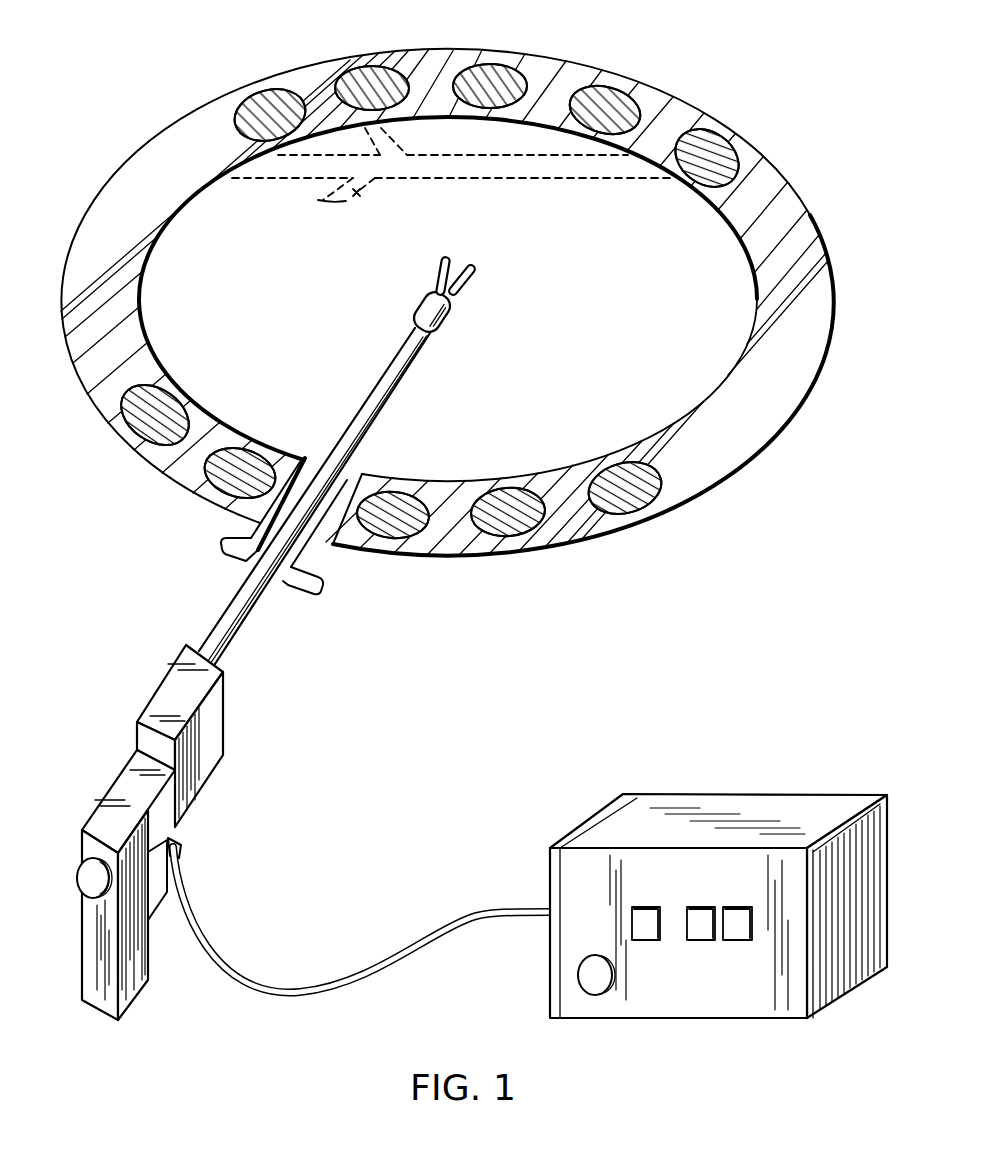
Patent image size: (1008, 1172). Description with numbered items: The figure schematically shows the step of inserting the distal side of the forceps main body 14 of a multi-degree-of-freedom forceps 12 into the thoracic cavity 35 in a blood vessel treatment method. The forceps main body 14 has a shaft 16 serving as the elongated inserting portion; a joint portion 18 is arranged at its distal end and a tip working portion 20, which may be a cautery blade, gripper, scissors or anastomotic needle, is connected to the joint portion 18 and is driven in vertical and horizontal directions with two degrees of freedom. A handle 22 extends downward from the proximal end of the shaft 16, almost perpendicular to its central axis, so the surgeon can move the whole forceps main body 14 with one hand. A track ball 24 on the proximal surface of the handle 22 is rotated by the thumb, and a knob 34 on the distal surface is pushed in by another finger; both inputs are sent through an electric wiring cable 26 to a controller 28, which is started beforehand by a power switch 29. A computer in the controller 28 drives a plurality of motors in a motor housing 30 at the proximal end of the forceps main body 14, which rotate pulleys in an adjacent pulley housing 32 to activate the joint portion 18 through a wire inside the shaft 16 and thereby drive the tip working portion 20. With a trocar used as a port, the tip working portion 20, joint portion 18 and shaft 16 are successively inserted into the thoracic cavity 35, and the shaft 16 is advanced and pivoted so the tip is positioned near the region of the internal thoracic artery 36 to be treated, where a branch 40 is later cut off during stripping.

The multi-degree-of-freedom forceps 12 is at (208, 599).
The forceps main body 14 is at (241, 653).
The shaft 16 is at (246, 626).
The joint portion 18 is at (447, 321).
The tip working portion 20 is at (467, 289).
The handle 22 is at (92, 1003).
The track ball 24 is at (80, 868).
The electric wiring cable 26 is at (241, 958).
The controller 28 is at (748, 790).
The power switch 29 is at (594, 996).
The motor housing 30 is at (223, 744).
The pulley housing 32 is at (163, 683).
The knob 34 is at (157, 903).
The thoracic cavity 35 is at (737, 297).
The internal thoracic artery 36 is at (553, 182).
The branch 40 is at (358, 193).